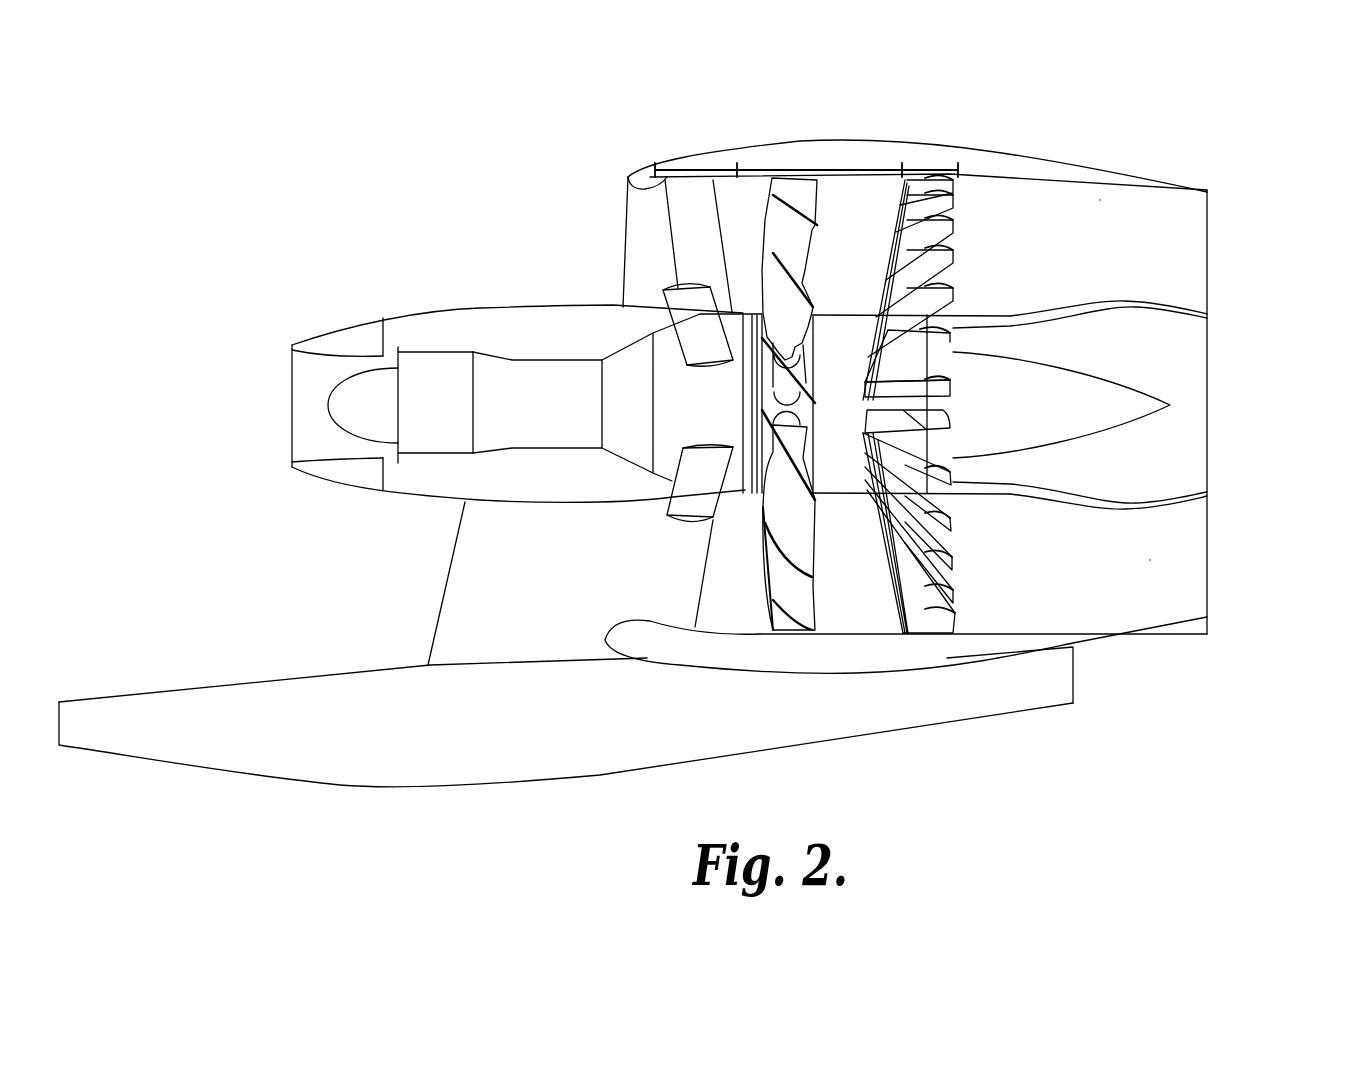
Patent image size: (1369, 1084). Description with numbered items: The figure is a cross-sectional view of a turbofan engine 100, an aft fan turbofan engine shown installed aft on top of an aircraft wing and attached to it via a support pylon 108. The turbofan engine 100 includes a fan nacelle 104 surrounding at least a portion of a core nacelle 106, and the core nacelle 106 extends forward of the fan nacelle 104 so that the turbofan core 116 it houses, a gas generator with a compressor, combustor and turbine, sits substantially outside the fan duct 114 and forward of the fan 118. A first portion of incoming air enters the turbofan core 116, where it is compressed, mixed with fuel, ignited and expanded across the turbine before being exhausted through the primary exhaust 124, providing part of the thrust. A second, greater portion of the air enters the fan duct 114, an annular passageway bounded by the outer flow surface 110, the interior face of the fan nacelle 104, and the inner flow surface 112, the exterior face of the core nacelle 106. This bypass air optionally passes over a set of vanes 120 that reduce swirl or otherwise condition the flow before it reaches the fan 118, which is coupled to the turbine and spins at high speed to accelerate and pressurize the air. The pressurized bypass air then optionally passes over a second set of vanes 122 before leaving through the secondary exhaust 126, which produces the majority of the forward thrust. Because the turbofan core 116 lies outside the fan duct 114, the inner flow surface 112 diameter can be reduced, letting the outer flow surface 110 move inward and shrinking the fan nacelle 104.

The turbofan engine 100 is at (506, 177).
The fan nacelle 104 is at (1027, 163).
The core nacelle 106 is at (342, 335).
The support pylon 108 is at (357, 757).
The outer flow surface 110 is at (1055, 177).
The inner flow surface 112 is at (1007, 317).
The fan duct 114 is at (1158, 245).
The turbofan core 116 is at (433, 432).
The fan 118 is at (777, 580).
The set of vanes 120 is at (697, 207).
The second set of vanes 122 is at (930, 603).
The primary exhaust 124 is at (1182, 423).
The secondary exhaust 126 is at (1195, 533).